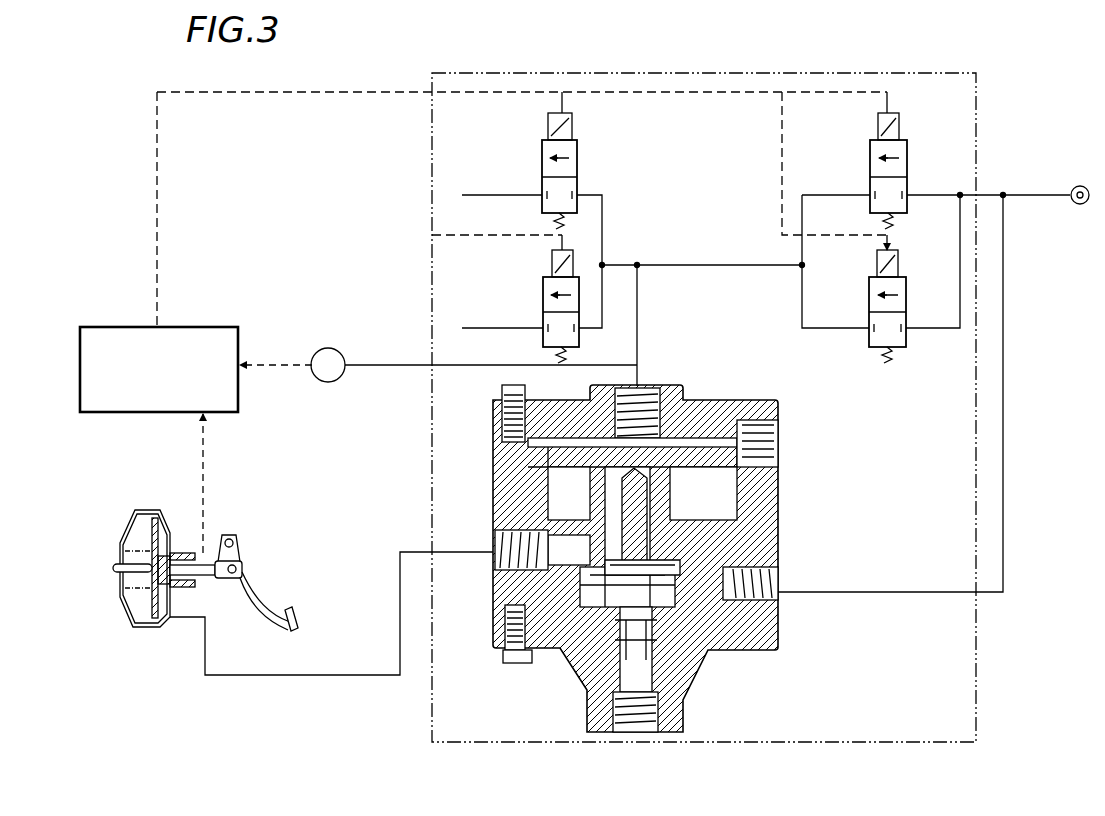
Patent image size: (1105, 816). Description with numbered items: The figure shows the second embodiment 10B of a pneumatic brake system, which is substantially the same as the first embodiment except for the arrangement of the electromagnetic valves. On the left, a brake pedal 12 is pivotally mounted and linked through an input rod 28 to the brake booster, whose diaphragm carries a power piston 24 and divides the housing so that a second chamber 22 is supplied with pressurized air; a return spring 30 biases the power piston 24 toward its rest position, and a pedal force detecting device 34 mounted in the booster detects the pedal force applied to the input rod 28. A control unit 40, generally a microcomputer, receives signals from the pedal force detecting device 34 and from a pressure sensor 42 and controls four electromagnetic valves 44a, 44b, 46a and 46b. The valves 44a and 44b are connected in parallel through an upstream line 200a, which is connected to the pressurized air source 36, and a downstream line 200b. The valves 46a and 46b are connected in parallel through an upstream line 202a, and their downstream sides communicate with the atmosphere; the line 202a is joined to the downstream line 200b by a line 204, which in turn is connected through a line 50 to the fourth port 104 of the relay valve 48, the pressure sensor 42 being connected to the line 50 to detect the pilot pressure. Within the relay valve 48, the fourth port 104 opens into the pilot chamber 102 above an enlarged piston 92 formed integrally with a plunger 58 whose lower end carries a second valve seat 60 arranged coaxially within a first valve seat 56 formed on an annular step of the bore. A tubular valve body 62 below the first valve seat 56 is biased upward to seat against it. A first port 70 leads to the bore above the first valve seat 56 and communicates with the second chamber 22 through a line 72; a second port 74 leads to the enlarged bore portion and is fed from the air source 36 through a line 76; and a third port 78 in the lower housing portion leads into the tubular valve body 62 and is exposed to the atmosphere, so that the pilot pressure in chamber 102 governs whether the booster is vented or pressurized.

The second embodiment 10B is at (738, 775).
The brake pedal 12 is at (246, 585).
The second chamber 22 is at (133, 628).
The power piston 24 is at (160, 597).
The input rod 28 is at (205, 578).
The return spring 30 is at (138, 548).
The pedal force detecting device 34 is at (186, 590).
The pressurized air source 36 is at (1077, 205).
The control unit 40 is at (148, 413).
The pressure sensor 42 is at (322, 383).
The electromagnetic valve 44a is at (899, 137).
The electromagnetic valve 44b is at (906, 340).
The electromagnetic valve 46a is at (577, 152).
The electromagnetic valve 46b is at (543, 298).
The relay valve 48 is at (792, 460).
The line 50 is at (637, 328).
The first valve seat 56 is at (700, 570).
The plunger 58 is at (655, 525).
The second valve seat 60 is at (606, 567).
The tubular valve body 62 is at (690, 662).
The first port 70 is at (498, 532).
The line 72 is at (298, 680).
The second port 74 is at (775, 598).
The line 76 is at (1003, 457).
The third port 78 is at (653, 712).
The piston 92 is at (742, 430).
The pilot chamber 102 is at (660, 438).
The fourth port 104 is at (648, 397).
The upstream line 200a is at (960, 287).
The downstream line 200b is at (797, 294).
The upstream line 202a is at (602, 213).
The line 204 is at (714, 266).